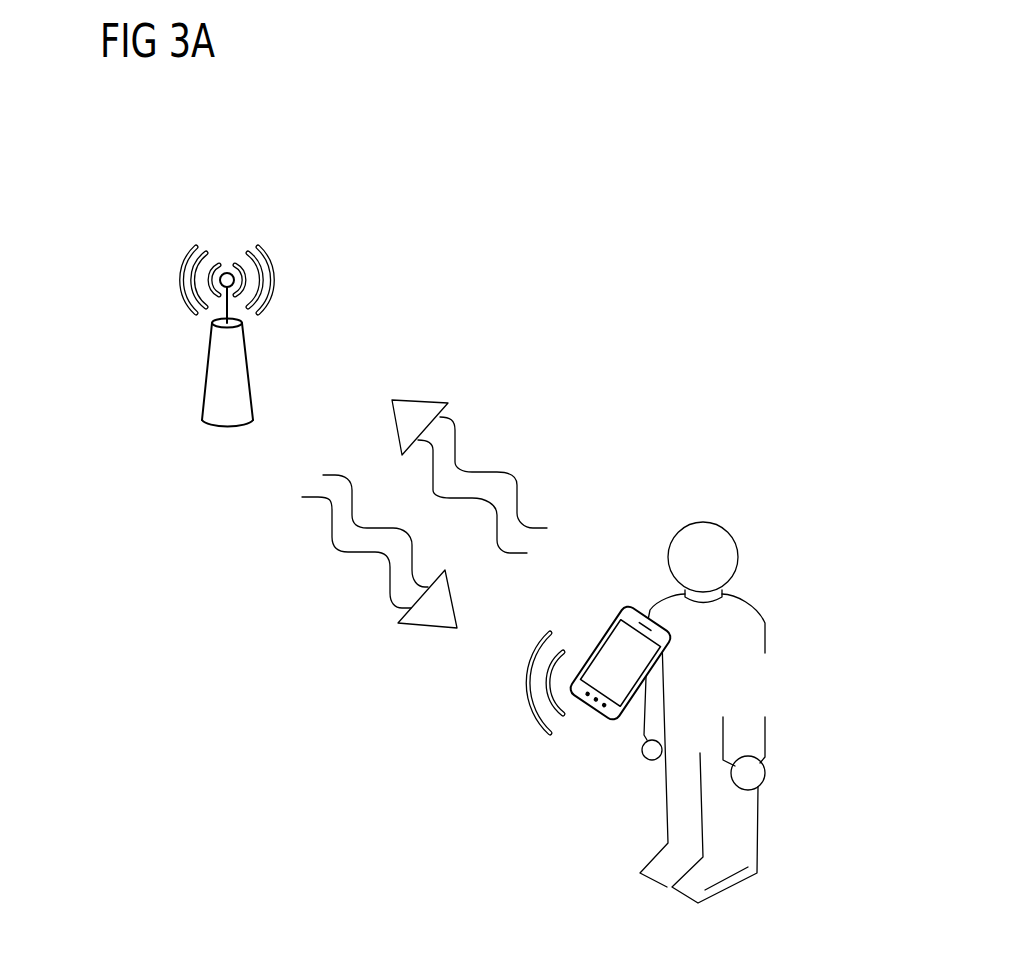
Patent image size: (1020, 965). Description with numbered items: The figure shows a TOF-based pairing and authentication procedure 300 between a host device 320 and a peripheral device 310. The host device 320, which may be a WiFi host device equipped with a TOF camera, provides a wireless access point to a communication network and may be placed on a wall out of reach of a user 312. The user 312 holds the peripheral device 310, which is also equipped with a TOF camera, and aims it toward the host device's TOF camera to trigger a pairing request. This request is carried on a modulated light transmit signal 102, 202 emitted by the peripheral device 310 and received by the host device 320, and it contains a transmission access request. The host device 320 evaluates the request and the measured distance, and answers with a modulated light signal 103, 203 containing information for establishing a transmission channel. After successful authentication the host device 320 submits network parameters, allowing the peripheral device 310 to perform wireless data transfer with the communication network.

The TOF-based pairing and authentication procedure 300 is at (680, 160).
The host device 320 is at (250, 368).
The modulated light transmit signal 102 is at (479, 463).
The modulated light receive signal 202 is at (453, 420).
The modulated light receive signal 103 is at (359, 551).
The modulated light transmit signal 203 is at (382, 557).
The peripheral device 310 is at (592, 642).
The user 312 is at (740, 558).